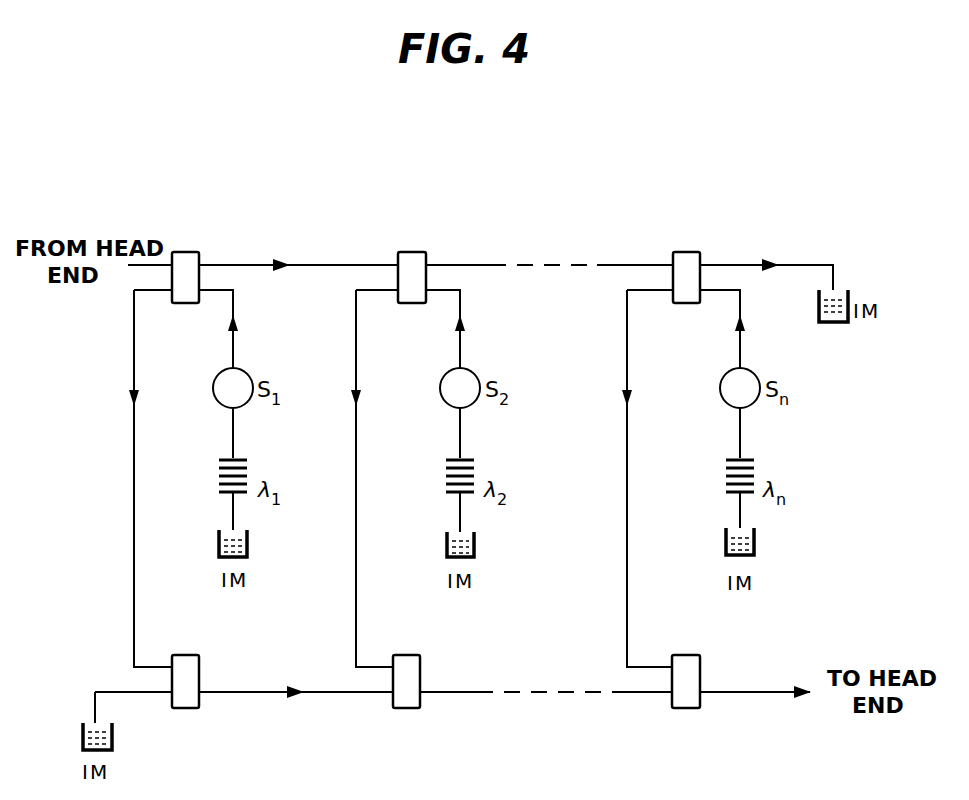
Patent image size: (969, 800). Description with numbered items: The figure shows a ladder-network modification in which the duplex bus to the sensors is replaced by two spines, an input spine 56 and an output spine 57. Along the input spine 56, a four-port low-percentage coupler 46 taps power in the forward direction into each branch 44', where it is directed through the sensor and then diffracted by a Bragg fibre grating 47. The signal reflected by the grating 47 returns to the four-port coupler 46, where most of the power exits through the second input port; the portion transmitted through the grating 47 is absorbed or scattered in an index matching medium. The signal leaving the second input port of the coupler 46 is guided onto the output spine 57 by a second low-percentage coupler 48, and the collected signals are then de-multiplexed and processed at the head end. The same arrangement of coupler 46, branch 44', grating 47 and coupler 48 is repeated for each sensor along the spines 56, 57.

The 4-port low percentage coupler 46 is at (187, 268).
The input spine 56 is at (313, 262).
The branch 44' is at (501, 325).
The Bragg fibre grating 47 is at (221, 472).
The second low-percentage coupler 48 is at (185, 674).
The output spine 57 is at (261, 700).